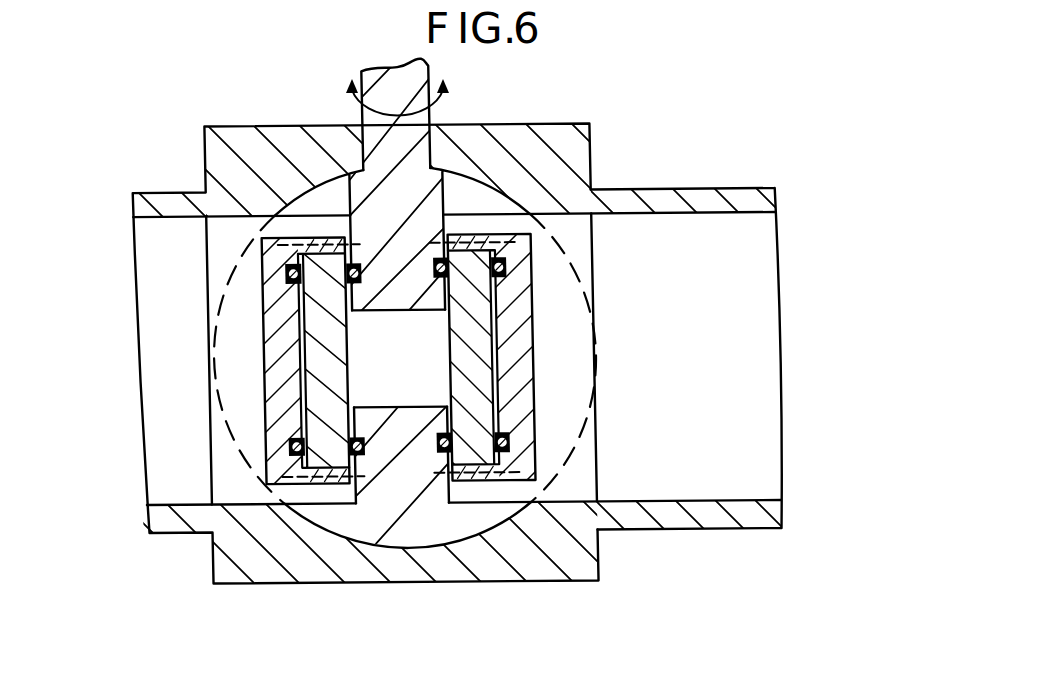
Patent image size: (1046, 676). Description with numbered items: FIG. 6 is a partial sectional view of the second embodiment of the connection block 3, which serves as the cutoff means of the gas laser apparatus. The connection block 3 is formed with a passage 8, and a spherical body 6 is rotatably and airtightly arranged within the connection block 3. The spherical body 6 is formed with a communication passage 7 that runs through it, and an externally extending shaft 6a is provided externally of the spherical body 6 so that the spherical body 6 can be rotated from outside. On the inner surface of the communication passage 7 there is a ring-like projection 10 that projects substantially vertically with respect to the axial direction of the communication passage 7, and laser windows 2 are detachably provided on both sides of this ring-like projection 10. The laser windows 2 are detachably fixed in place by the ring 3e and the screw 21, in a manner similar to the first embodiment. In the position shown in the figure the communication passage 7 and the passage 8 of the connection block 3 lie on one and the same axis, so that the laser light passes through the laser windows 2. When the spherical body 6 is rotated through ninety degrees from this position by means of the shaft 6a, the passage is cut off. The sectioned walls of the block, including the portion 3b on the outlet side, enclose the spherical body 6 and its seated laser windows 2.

The laser window 2 is at (305, 392).
The connection block 3 is at (186, 103).
The outlet passage portion of valve body 3b is at (780, 513).
The ring 3e is at (275, 350).
The spherical body 6 is at (400, 388).
The shaft 6a is at (406, 113).
The communication passage 7 is at (345, 530).
The passage 8 is at (650, 280).
The ring-like projection 10 is at (383, 273).
The screw 21 is at (263, 244).